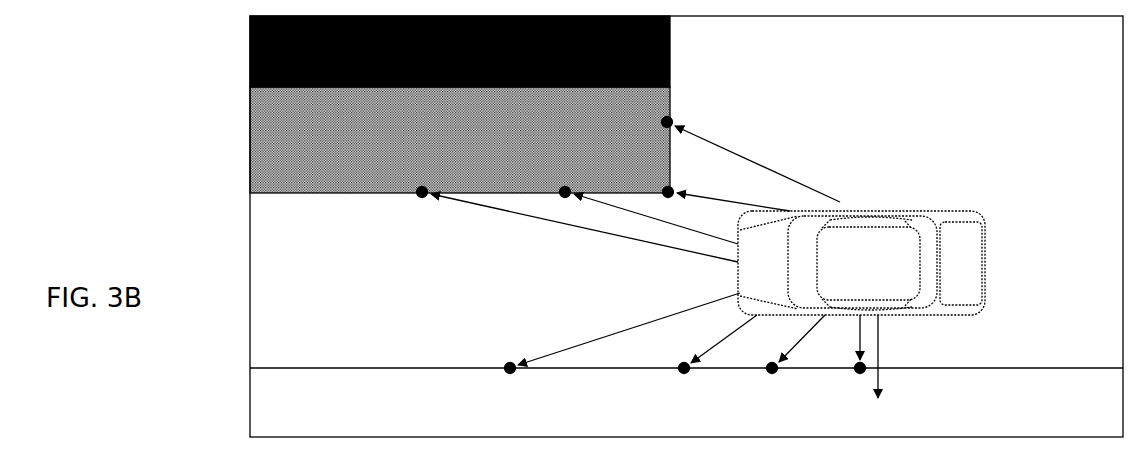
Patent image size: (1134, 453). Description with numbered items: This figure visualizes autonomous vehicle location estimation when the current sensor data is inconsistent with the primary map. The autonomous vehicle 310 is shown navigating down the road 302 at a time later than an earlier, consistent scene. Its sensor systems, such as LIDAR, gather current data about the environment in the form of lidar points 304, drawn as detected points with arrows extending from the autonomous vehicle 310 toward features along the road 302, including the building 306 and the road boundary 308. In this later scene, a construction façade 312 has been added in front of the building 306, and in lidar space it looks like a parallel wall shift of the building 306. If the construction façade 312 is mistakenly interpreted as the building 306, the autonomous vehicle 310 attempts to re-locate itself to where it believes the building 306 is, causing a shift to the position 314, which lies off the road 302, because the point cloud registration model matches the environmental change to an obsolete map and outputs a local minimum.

The road 302 is at (686, 226).
The lidar point 304 is at (415, 198).
The building 306 is at (670, 27).
The road boundary 308 is at (1010, 368).
The autonomous vehicle 310 is at (861, 263).
The construction façade 312 is at (460, 140).
The position 314 is at (900, 368).